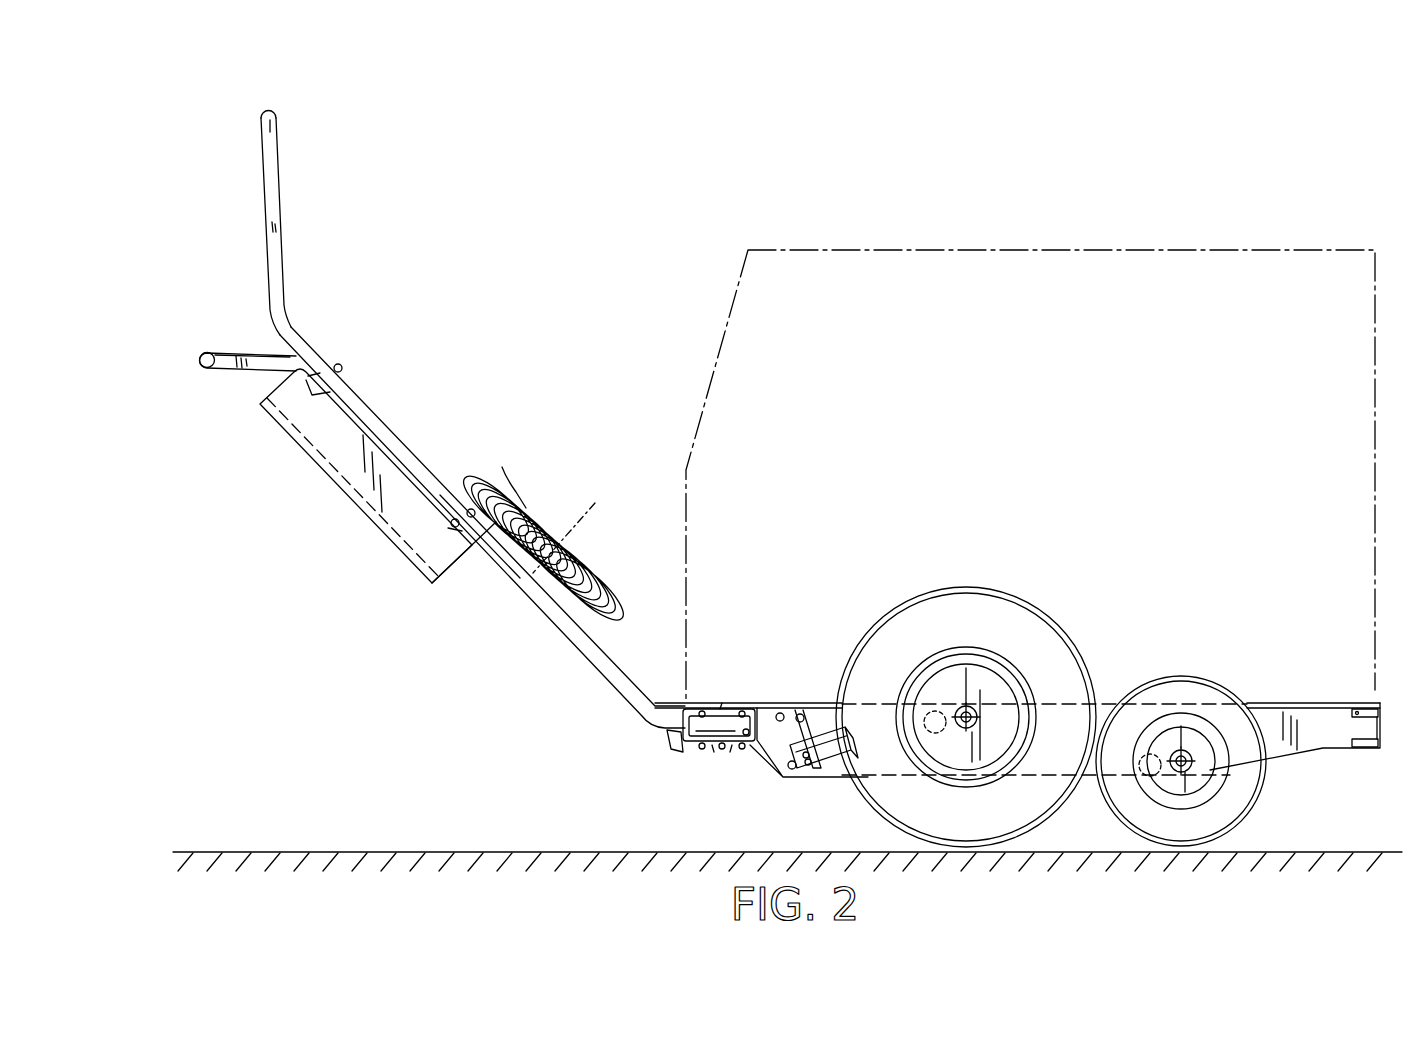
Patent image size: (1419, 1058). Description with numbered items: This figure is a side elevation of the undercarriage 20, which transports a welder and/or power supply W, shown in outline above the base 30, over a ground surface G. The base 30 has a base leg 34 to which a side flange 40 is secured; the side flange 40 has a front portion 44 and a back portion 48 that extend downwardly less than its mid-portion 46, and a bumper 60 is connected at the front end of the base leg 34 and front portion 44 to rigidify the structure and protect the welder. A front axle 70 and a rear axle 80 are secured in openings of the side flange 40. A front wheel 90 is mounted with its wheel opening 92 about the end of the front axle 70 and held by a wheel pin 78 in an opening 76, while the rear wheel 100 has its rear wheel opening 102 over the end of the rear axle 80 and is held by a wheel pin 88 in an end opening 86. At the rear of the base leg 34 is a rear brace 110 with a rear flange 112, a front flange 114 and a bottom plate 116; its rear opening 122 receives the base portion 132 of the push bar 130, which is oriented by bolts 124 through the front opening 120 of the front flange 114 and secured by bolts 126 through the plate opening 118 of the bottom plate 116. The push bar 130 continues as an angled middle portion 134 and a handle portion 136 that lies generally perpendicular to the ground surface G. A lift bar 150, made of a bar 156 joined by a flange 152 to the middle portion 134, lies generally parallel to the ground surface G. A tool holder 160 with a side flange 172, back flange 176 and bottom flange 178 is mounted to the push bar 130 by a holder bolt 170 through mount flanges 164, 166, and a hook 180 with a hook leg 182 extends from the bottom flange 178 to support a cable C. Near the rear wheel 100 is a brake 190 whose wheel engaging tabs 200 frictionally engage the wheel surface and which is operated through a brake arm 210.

The undercarriage 20 is at (858, 462).
The base 30 is at (1339, 752).
The base leg 34 is at (1307, 700).
The side flange 40 is at (1310, 755).
The front portion 44 is at (1362, 744).
The mid-portion 46 is at (1097, 768).
The back portion 48 is at (723, 710).
The bumper 60 is at (1382, 718).
The front axle 70 is at (1186, 758).
The opening 76 is at (1186, 764).
The wheel pin 78 is at (1178, 766).
The rear axle 80 is at (969, 716).
The end opening 86 is at (966, 722).
The wheel pin 88 is at (962, 721).
The front wheel 90 is at (1190, 681).
The wheel opening 92 is at (1179, 757).
The rear wheel 100 is at (1003, 606).
The rear wheel opening 102 is at (963, 714).
The rear brace 110 is at (678, 748).
The rear flange 112 is at (682, 722).
The front flange 114 is at (758, 724).
The bottom plate 116 is at (720, 750).
The plate opening 118 is at (697, 750).
The front opening 120 is at (786, 762).
The rear opening 122 is at (662, 736).
The bolt 124 is at (769, 722).
The bolt 126 is at (700, 711).
The push bar 130 is at (396, 422).
The base portion 132 is at (718, 726).
The middle portion 134 is at (528, 585).
The handle portion 136 is at (272, 148).
The lift bar 150 is at (226, 343).
The flange 152 is at (234, 370).
The bar 156 is at (200, 364).
The tool holder 160 is at (345, 510).
The mount flange 164 is at (334, 390).
The mount flange 166 is at (455, 518).
The holder bolt 170 is at (338, 364).
The side flange 172 is at (323, 443).
The back flange 176 is at (396, 548).
The bottom flange 178 is at (449, 588).
The hook 180 is at (524, 492).
The hook leg 182 is at (509, 470).
The brake 190 is at (838, 781).
The wheel engaging tab 200 is at (822, 733).
The brake arm 210 is at (822, 726).
The cable C is at (573, 529).
The ground surface G is at (603, 851).
The welder W is at (1003, 264).